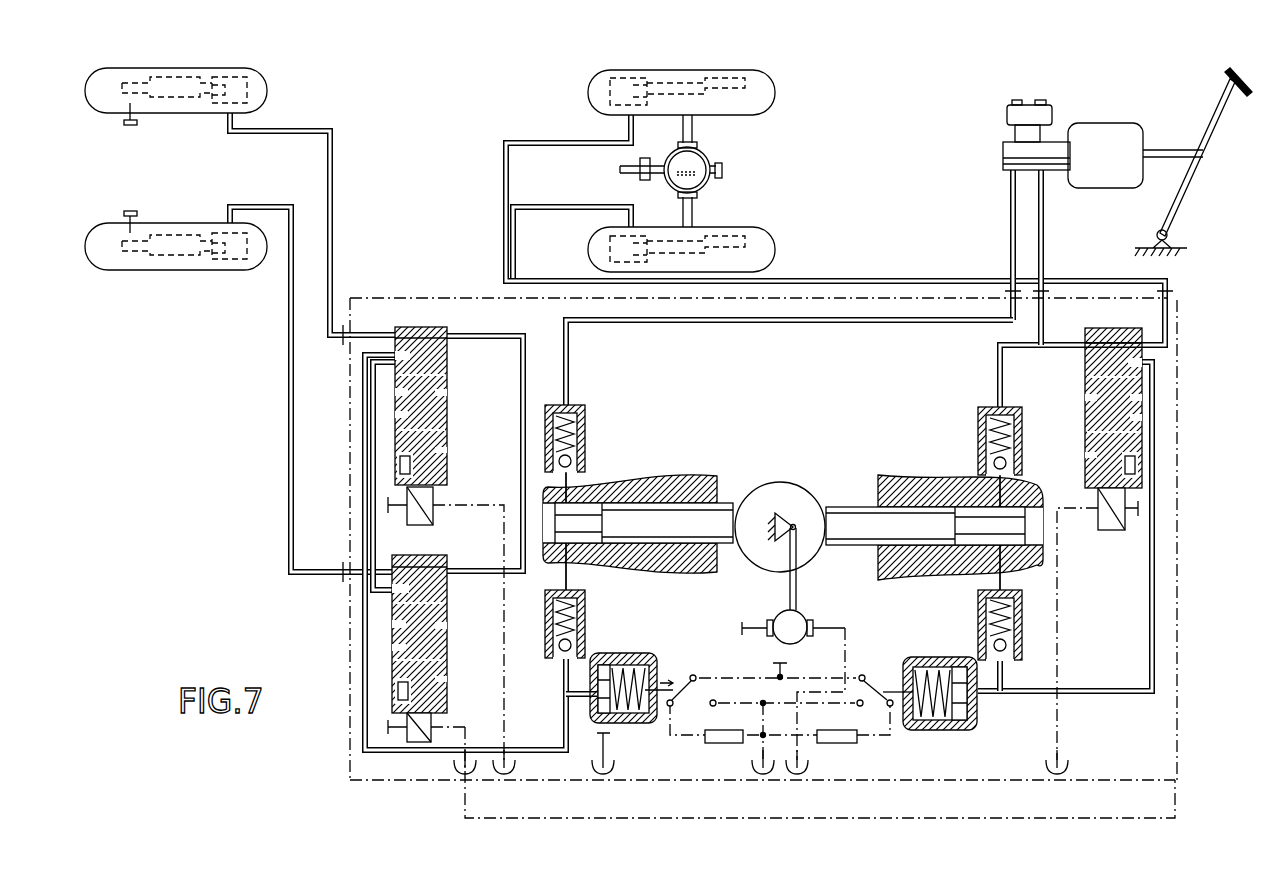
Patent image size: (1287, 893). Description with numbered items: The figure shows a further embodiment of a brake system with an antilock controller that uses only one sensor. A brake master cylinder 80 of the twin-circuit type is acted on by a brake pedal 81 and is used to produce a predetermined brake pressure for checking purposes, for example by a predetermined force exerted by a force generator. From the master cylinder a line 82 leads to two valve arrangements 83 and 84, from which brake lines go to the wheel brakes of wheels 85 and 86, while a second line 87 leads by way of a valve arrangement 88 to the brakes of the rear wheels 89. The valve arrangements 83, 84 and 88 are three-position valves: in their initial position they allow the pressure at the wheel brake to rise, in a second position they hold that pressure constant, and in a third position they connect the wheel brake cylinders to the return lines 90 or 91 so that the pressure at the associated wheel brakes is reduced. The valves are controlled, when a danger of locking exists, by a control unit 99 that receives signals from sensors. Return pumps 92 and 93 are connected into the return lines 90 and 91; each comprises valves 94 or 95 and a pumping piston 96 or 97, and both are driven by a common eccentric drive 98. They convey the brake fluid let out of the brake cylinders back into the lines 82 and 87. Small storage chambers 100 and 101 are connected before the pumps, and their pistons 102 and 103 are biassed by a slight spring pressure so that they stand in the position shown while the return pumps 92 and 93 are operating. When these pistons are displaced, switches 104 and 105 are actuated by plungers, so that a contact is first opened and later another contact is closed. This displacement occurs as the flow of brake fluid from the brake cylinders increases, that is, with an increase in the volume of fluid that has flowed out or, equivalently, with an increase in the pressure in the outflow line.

The brake master cylinder 80 is at (1020, 154).
The brake pedal 81 is at (1215, 120).
The line 82 is at (857, 324).
The valve arrangement 83 is at (395, 420).
The valve arrangement 84 is at (392, 620).
The wheel 85 is at (267, 93).
The wheel 86 is at (130, 270).
The second line 87 is at (1047, 208).
The valve arrangement 88 is at (1142, 407).
The rear wheels 89 is at (755, 107).
The return line 90 is at (382, 753).
The return line 91 is at (1117, 695).
The return pump 92 is at (622, 578).
The return pump 93 is at (952, 588).
The valves 94 is at (585, 423).
The valves 95 is at (978, 435).
The pumping piston 96 is at (647, 517).
The pumping piston 97 is at (862, 507).
The common eccentric drive 98 is at (792, 482).
The control unit 99 is at (477, 805).
The small storage chamber 100 is at (670, 655).
The small storage chamber 101 is at (920, 672).
The piston 102 is at (592, 708).
The piston 103 is at (975, 708).
The switch 104 is at (687, 690).
The switch 105 is at (888, 700).